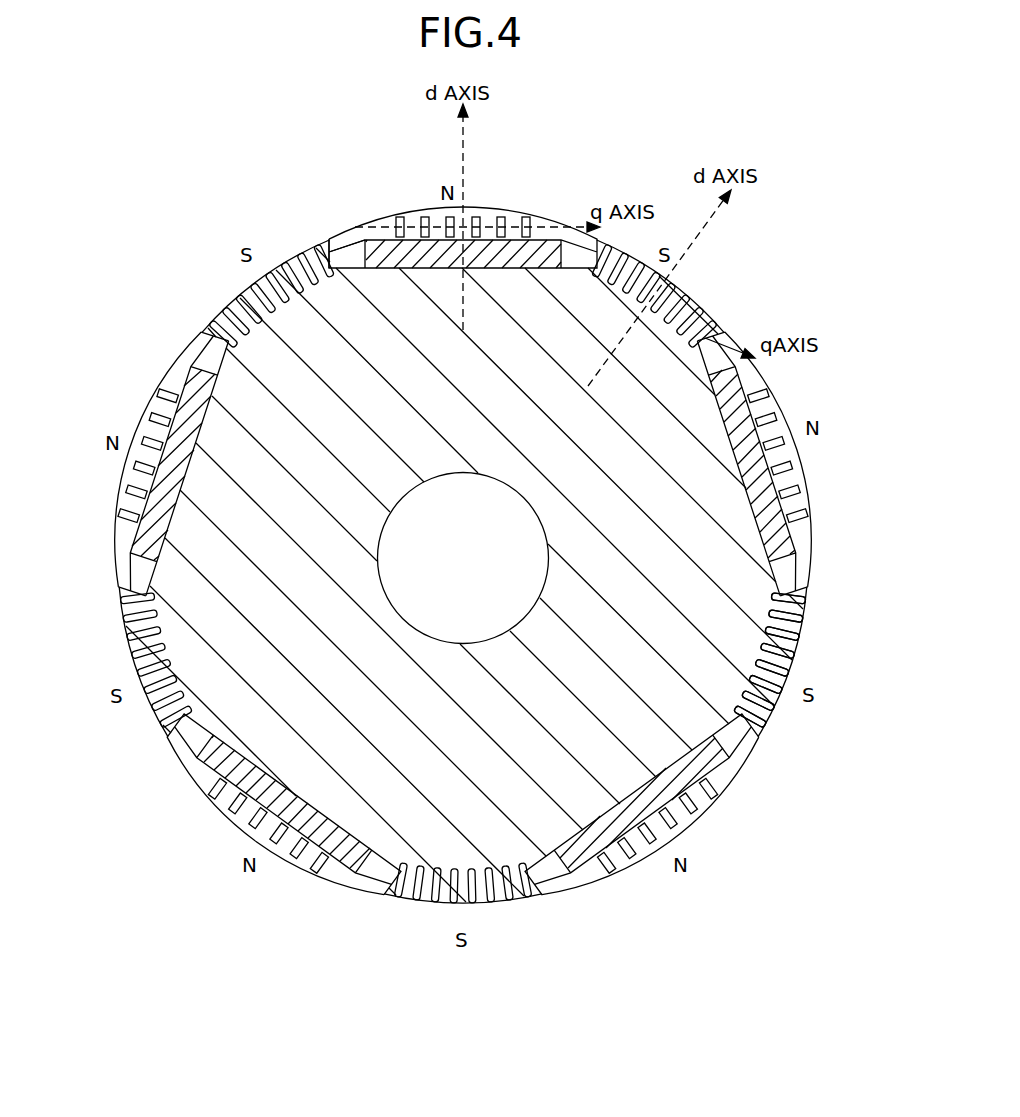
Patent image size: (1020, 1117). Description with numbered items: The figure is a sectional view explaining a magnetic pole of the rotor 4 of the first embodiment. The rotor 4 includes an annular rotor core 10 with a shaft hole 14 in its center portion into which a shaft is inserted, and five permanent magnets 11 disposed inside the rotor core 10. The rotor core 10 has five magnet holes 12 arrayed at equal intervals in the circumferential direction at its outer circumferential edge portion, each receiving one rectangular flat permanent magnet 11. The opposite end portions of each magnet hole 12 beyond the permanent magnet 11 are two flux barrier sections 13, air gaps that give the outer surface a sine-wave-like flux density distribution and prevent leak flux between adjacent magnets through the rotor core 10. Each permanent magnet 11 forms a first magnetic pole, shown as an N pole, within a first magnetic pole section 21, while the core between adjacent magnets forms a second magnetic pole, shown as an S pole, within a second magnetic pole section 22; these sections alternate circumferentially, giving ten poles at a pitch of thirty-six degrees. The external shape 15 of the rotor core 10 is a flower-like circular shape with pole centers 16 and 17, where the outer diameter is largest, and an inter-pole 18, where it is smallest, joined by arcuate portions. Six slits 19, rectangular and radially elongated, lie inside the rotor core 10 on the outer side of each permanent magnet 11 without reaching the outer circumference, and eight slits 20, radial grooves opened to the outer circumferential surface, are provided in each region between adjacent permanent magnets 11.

The rotor 4 is at (757, 228).
The rotor core 10 is at (205, 668).
The permanent magnet 11 is at (535, 247).
The magnet hole 12 is at (390, 266).
The flux barrier section 13 is at (190, 360).
The shaft hole 14 is at (547, 590).
The external shape 15 is at (806, 522).
The pole center 16 is at (800, 447).
The pole center 17 is at (800, 660).
The inter-pole 18 is at (808, 562).
The slit 19 is at (480, 217).
The slit 20 is at (698, 298).
The first magnetic pole section 21 is at (306, 940).
The second magnetic pole section 22 is at (537, 981).